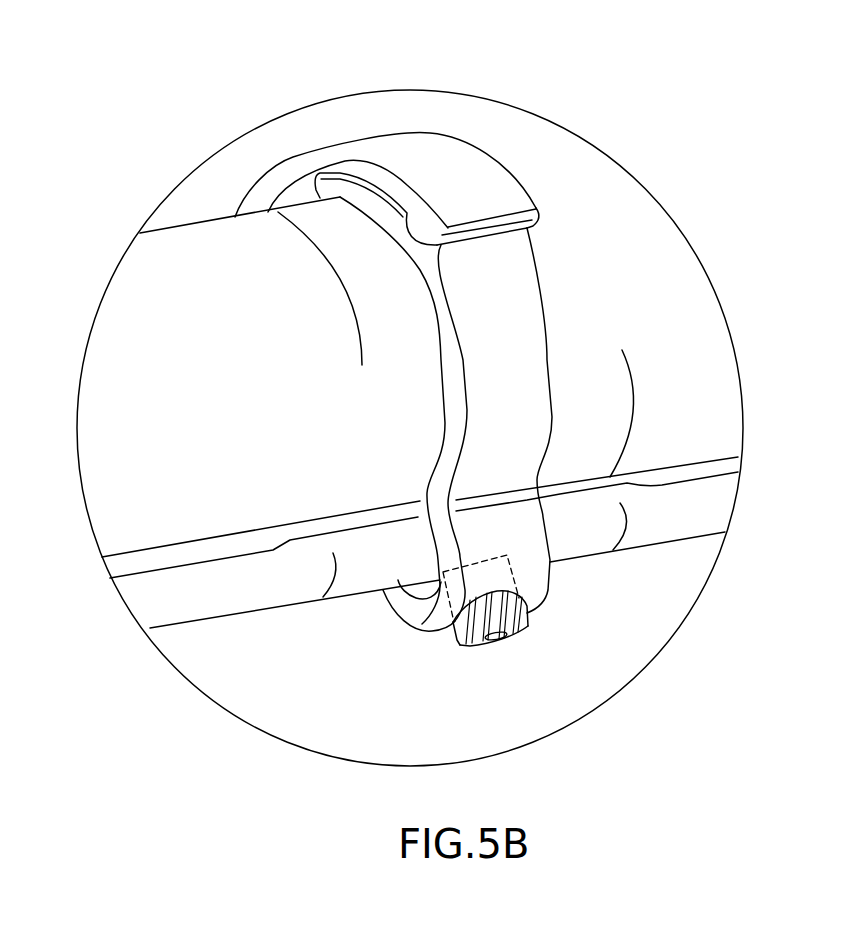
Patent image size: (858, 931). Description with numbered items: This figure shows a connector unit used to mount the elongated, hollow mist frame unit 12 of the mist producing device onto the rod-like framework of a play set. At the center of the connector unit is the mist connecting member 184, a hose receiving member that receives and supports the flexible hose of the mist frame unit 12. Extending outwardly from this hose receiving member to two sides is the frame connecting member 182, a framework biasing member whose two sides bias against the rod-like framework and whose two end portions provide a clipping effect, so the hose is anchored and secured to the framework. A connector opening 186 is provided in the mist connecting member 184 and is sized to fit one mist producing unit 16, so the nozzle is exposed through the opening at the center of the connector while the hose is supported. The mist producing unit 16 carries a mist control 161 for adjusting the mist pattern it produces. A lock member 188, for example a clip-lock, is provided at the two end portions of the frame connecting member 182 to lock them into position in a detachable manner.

The mist frame unit 12 is at (613, 505).
The mist producing unit 16 is at (528, 620).
The mist control 161 is at (493, 637).
The frame connecting member 182 is at (488, 317).
The mist connecting member 184 is at (473, 545).
The connector opening 186 is at (467, 645).
The lock member 188 is at (425, 162).